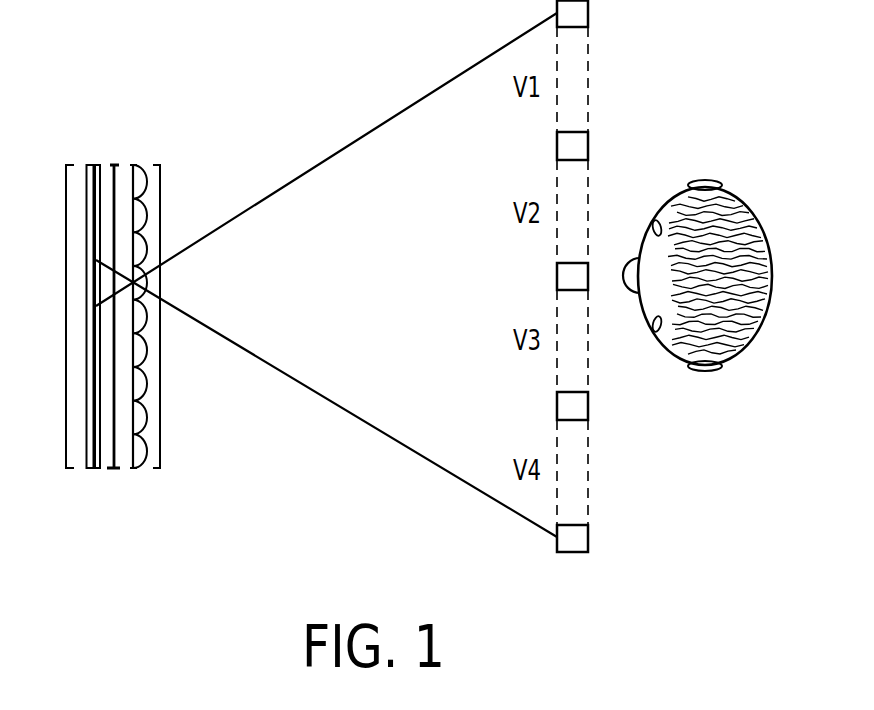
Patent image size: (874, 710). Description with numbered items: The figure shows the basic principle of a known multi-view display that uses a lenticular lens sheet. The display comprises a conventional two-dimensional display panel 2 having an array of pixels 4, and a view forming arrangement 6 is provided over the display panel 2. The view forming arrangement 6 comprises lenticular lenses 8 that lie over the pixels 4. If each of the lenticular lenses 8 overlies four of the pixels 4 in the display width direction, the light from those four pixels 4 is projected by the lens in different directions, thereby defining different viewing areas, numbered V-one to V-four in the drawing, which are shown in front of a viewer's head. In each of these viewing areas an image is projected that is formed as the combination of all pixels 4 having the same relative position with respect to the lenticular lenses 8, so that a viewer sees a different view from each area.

The display panel 2 is at (70, 344).
The pixels 4 is at (92, 376).
The view forming arrangement 6 is at (160, 344).
The lenticular lenses 8 is at (143, 453).